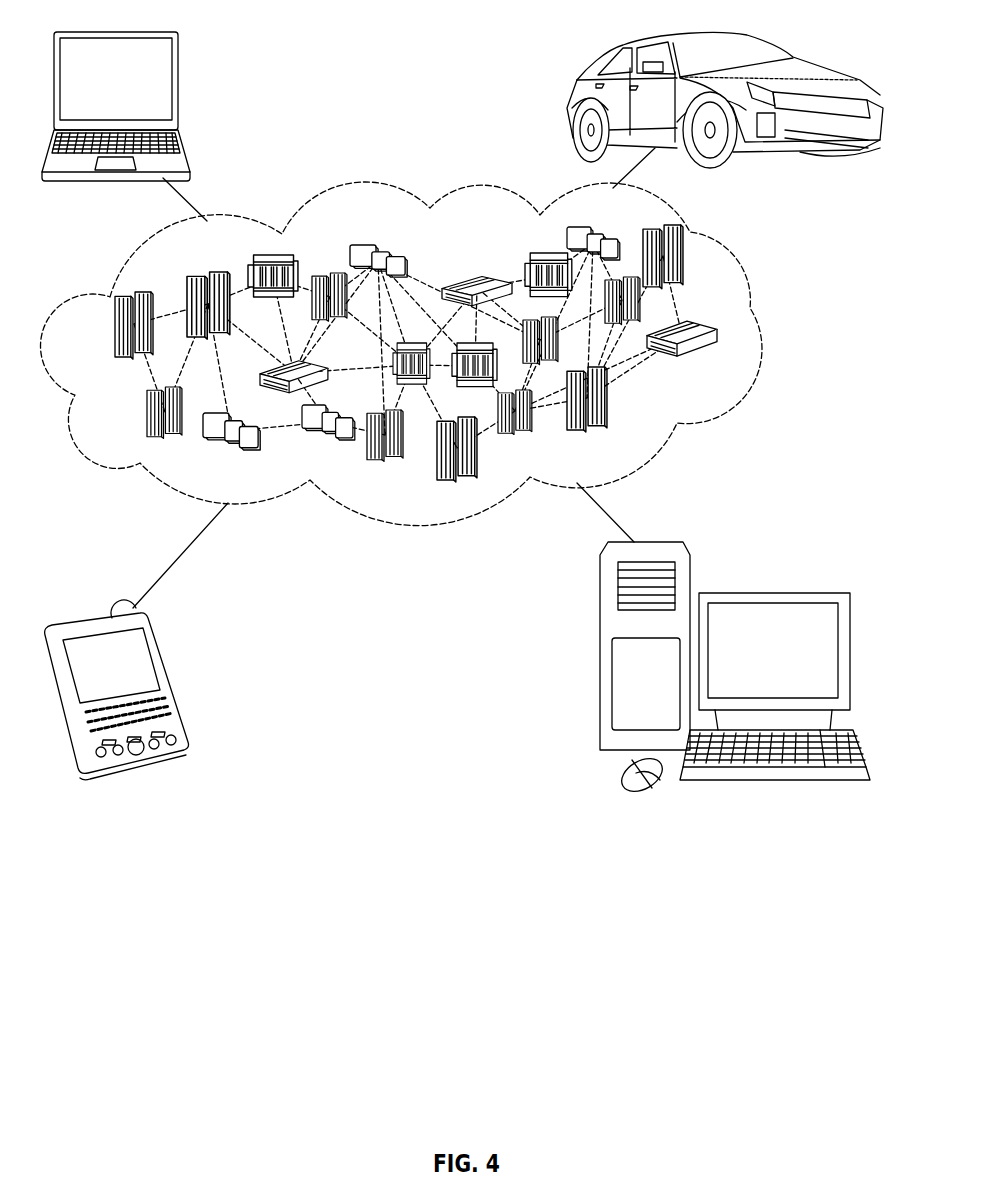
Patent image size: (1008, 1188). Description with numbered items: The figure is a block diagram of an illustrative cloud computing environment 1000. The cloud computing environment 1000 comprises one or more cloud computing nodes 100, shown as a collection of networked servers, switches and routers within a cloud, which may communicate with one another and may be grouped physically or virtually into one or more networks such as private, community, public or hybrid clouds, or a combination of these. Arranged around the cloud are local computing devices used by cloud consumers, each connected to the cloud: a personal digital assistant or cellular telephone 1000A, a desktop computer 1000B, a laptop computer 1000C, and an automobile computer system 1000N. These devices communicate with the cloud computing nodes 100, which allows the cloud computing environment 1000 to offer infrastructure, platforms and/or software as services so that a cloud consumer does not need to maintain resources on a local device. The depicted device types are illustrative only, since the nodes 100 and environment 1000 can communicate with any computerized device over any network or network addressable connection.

The cloud computing environment 1000 is at (773, 333).
The cloud computing nodes 100 is at (718, 360).
The personal digital assistant or cellular telephone 1000A is at (172, 680).
The desktop computer 1000B is at (770, 593).
The laptop computer 1000C is at (178, 88).
The automobile computer system 1000N is at (573, 102).